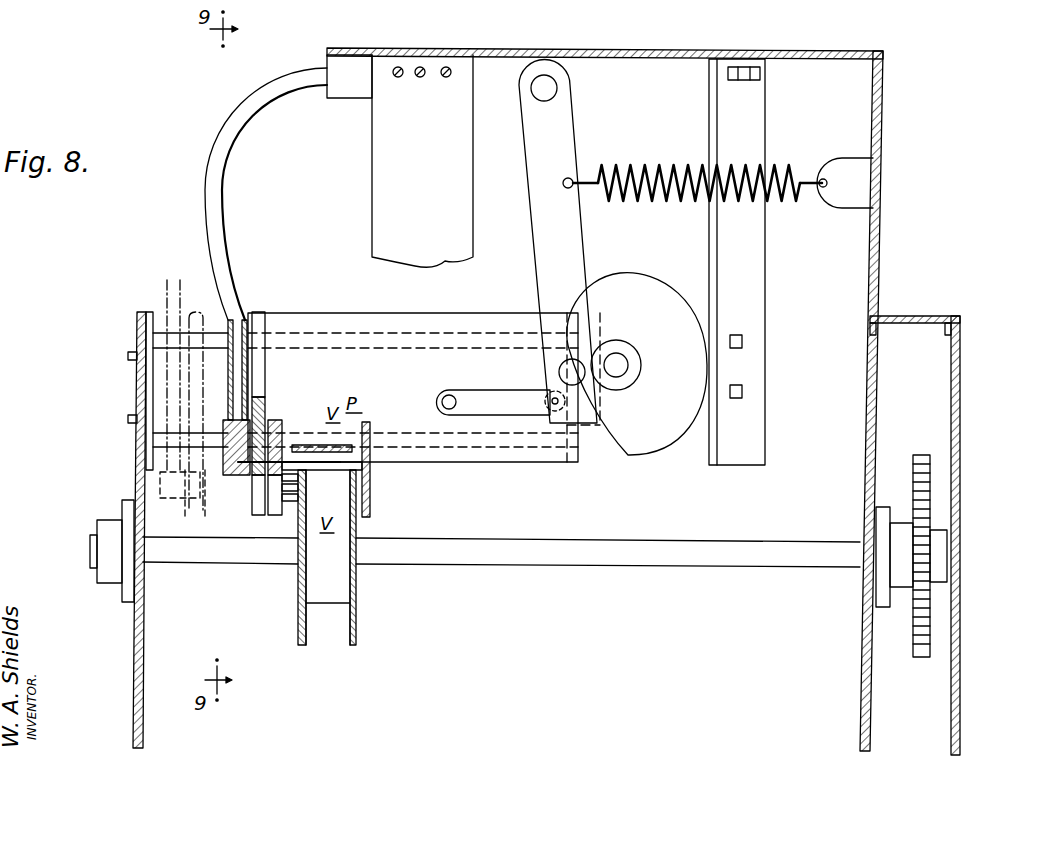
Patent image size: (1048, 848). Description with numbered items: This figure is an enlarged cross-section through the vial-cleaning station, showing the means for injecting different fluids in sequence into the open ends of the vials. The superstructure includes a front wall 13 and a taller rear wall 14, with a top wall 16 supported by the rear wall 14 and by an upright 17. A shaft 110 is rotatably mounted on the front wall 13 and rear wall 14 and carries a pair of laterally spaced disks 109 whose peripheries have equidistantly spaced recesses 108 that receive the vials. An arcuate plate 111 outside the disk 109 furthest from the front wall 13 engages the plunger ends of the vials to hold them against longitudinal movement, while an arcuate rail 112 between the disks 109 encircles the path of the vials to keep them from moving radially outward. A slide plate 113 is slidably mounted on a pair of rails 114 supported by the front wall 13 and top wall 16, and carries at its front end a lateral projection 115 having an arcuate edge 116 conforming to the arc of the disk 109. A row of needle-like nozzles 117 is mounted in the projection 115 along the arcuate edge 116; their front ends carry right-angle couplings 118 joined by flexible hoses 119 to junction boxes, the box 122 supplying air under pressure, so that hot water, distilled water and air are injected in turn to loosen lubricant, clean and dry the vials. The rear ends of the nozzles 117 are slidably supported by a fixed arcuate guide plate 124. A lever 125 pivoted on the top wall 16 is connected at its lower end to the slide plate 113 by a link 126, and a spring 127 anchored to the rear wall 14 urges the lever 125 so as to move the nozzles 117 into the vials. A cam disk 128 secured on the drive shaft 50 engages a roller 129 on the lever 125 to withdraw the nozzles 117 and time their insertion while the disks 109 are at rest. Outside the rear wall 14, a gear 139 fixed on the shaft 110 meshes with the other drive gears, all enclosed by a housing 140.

The front wall 13 is at (133, 646).
The rear wall 14 is at (883, 228).
The top wall 16 is at (676, 49).
The upright 17 is at (381, 210).
The drive shaft 50 is at (620, 356).
The recesses 108 is at (322, 636).
The disks 109 is at (352, 648).
The shaft 110 is at (455, 568).
The arcuate plate 111 is at (372, 492).
The arcuate rail 112 is at (340, 445).
The slide plate 113 is at (432, 316).
The rails 114 is at (690, 445).
The lateral projection 115 is at (258, 316).
The arcuate edge 116 is at (255, 500).
The nozzles 117 is at (316, 450).
The right-angle couplings 118 is at (170, 470).
The flexible hoses 119 is at (228, 125).
The junction-box 122 is at (342, 88).
The arcuate guide plate 124 is at (276, 420).
The lever 125 is at (568, 133).
The link 126 is at (498, 398).
The spring 127 is at (688, 165).
The cam disk 128 is at (612, 277).
The roller 129 is at (563, 362).
The gear 139 is at (917, 658).
The housing 140 is at (952, 450).